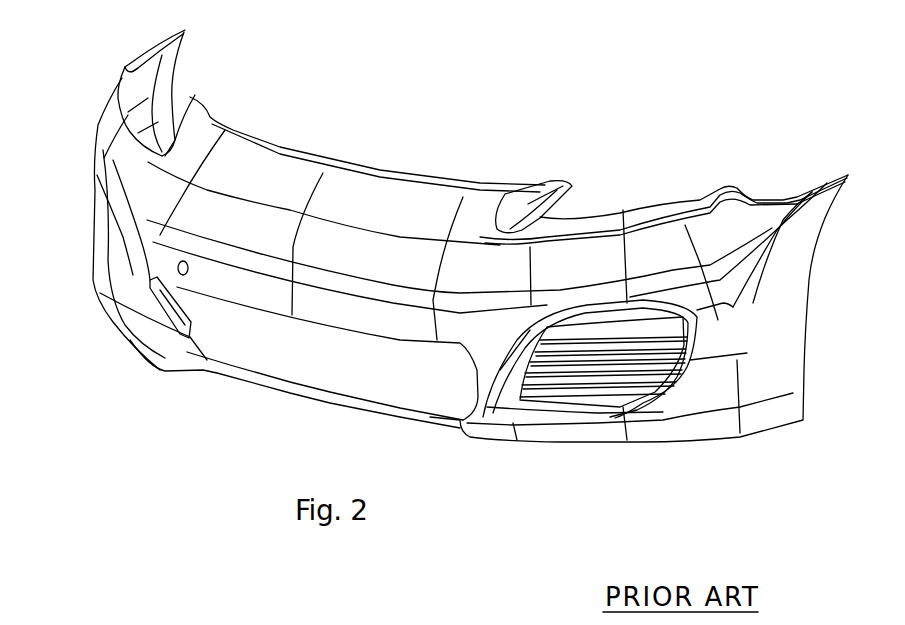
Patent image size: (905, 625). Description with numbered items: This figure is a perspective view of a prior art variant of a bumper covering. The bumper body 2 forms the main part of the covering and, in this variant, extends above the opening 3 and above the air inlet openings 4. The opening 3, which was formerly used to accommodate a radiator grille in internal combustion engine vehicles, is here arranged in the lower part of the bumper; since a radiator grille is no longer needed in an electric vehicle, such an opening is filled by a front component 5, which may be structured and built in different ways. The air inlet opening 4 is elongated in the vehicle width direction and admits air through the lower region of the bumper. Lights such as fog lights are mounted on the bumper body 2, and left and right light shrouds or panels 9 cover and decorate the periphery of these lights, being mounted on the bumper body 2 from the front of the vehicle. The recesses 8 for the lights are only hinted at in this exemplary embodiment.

The bumper body 2 is at (770, 312).
The first opening 3 is at (213, 270).
The air inlet opening 4 is at (605, 362).
The front component 5 is at (308, 355).
The recess for the light 8 is at (672, 182).
The light shroud 9 is at (122, 75).